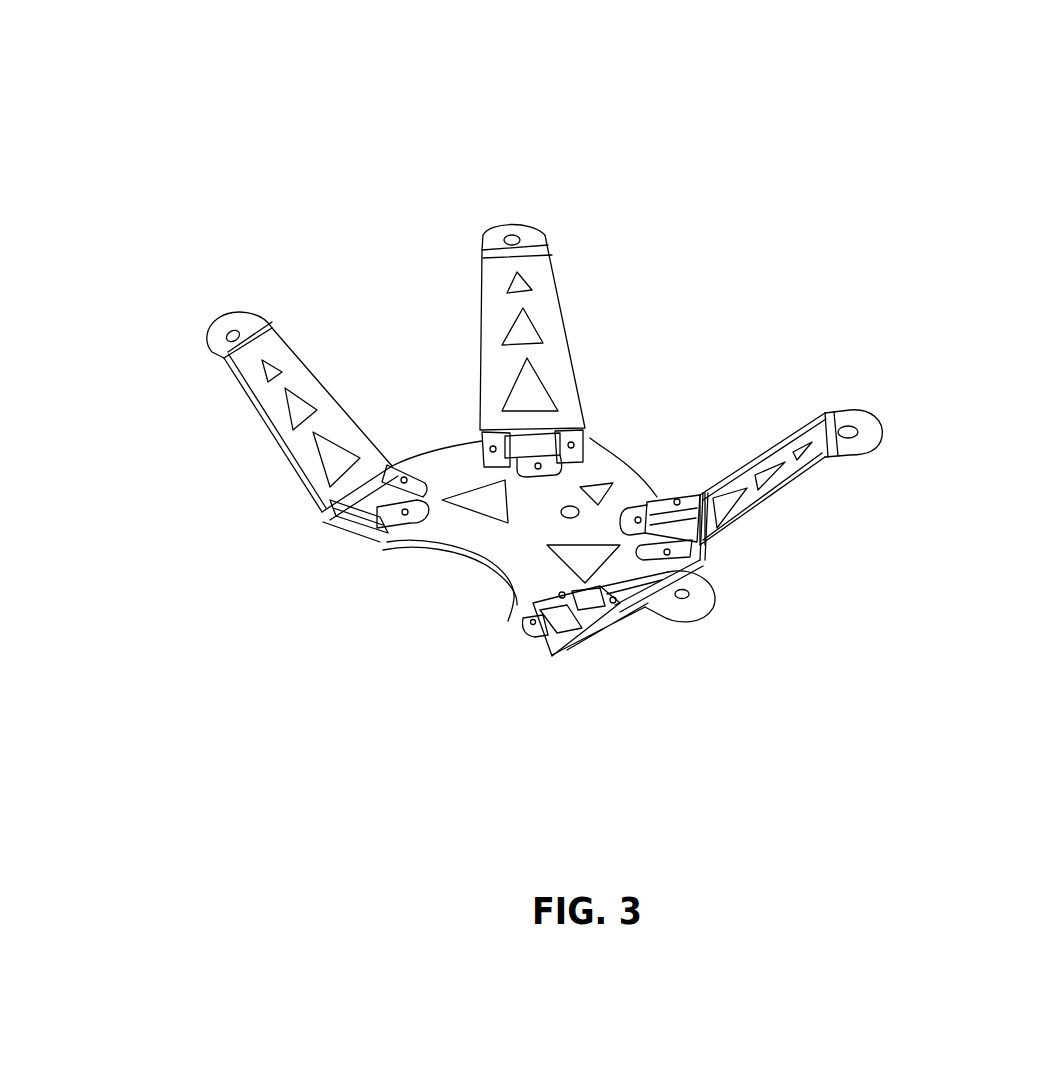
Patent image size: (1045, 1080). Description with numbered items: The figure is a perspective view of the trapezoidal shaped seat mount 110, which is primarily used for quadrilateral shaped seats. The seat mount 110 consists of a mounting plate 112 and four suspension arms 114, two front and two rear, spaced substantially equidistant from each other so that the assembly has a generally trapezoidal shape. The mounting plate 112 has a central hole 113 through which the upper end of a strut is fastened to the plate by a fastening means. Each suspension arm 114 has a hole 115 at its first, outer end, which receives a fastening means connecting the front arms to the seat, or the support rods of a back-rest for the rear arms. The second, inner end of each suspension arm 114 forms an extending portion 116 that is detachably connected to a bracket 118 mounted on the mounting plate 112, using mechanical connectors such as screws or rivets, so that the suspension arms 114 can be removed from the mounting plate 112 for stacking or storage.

The trapezoidal shaped seat mount 110 is at (716, 117).
The mounting plate 112 is at (473, 467).
The hole 113 is at (562, 510).
The suspension arm 114 is at (560, 348).
The hole 115 is at (512, 240).
The extending portion 116 is at (553, 463).
The bracket 118 is at (522, 433).